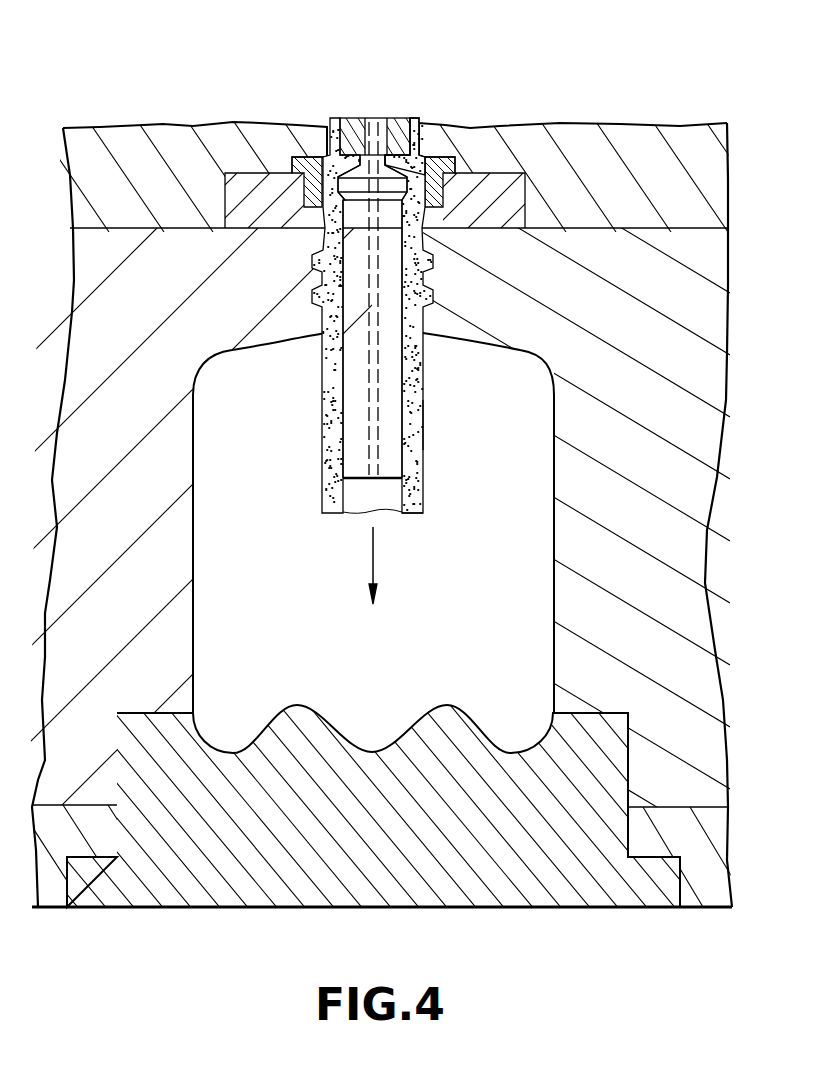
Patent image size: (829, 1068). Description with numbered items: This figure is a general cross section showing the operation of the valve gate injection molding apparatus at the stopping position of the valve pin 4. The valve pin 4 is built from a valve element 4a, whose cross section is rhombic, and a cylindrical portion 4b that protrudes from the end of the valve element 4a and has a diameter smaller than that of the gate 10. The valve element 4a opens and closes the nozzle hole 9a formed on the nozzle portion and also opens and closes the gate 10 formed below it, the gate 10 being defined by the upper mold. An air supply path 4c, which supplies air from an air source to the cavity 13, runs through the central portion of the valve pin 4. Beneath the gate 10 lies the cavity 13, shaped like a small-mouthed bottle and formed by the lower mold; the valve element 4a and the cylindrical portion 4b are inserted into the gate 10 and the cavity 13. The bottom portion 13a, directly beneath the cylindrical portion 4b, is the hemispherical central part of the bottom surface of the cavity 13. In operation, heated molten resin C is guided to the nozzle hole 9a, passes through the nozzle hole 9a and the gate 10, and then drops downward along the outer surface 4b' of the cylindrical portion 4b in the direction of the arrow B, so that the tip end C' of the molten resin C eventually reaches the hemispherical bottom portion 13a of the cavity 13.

The valve pin 4 is at (377, 118).
The valve element 4a is at (393, 178).
The cylindrical portion 4b is at (563, 300).
The outer surface of the cylindrical portion 4b' is at (441, 315).
The air supply path 4c is at (345, 405).
The nozzle hole 9a is at (415, 175).
The gate 10 is at (425, 250).
The cavity 13 is at (284, 604).
The bottom portion 13a is at (418, 732).
The molten resin C is at (454, 427).
The tip end of the molten resin C' is at (438, 534).
The arrow B is at (373, 570).